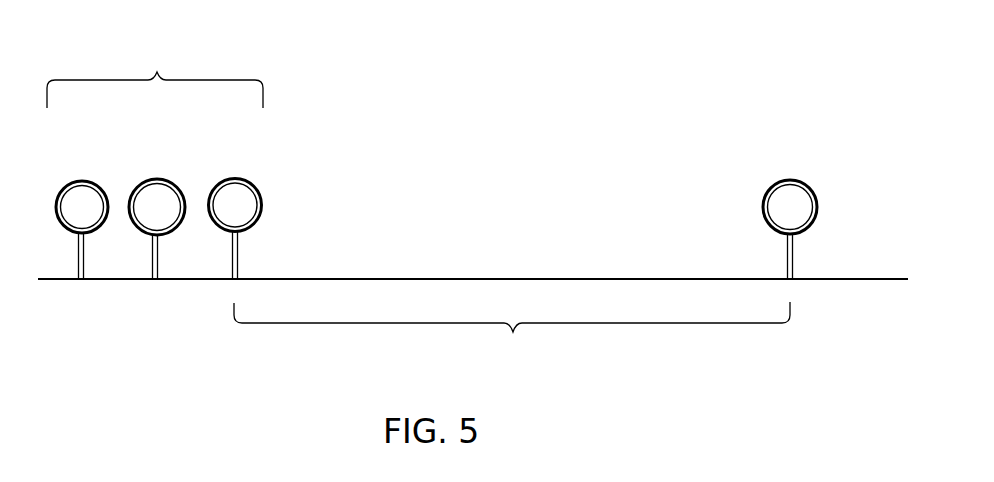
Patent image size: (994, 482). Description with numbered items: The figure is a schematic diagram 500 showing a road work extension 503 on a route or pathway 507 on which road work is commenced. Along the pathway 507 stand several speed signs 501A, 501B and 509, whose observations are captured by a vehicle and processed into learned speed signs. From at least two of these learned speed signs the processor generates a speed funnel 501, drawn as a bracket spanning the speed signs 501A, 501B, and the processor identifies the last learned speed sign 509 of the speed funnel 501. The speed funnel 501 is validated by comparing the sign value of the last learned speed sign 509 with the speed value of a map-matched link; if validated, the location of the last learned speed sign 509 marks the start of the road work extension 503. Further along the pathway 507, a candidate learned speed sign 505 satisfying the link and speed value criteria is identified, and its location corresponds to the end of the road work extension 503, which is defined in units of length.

The schematic diagram 500 is at (748, 78).
The speed funnel 501 is at (152, 161).
The speed sign 501A is at (82, 181).
The speed sign 501B is at (157, 179).
The road work extension 503 is at (512, 332).
The candidate learned speed sign 505 is at (763, 204).
The pathway 507 is at (870, 282).
The last learned speed sign 509 is at (262, 205).